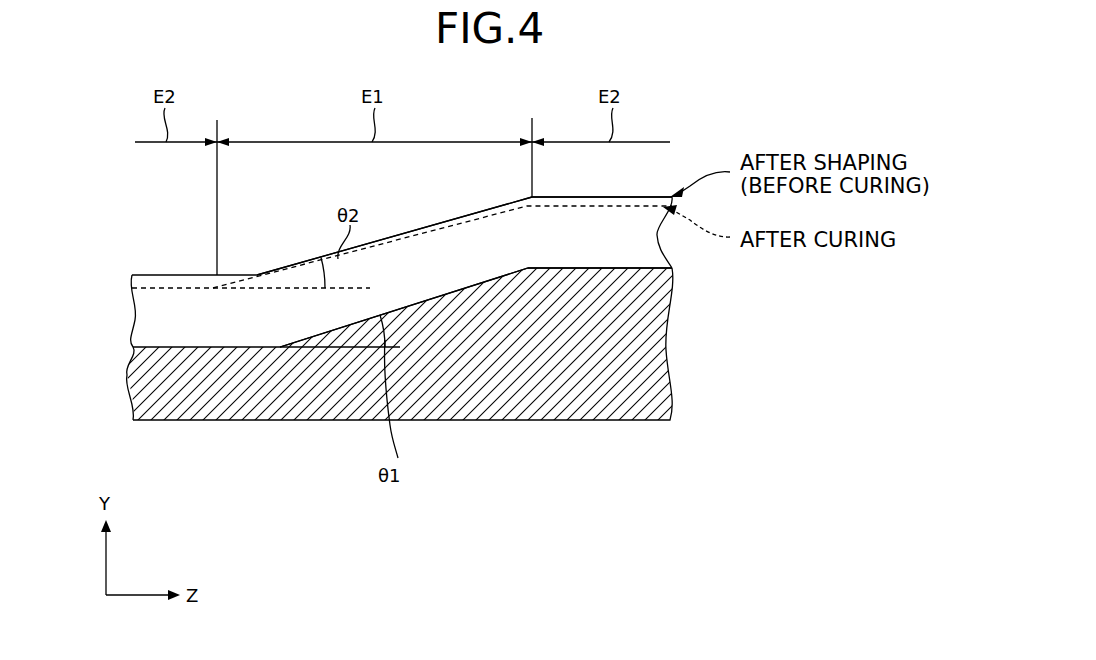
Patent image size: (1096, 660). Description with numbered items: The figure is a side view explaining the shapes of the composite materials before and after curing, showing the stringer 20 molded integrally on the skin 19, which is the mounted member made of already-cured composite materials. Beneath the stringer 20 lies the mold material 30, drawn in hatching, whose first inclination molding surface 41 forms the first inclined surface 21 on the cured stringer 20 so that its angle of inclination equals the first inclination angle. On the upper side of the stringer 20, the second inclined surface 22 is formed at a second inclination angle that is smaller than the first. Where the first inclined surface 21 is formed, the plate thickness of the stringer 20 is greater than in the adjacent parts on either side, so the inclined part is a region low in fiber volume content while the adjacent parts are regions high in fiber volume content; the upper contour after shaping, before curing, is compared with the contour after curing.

The skin 19 is at (438, 335).
The mold material 30 is at (136, 388).
The stringer 20 is at (146, 322).
The first inclined surface 21 is at (515, 272).
The second inclined surface 22 is at (447, 219).
The first inclination molding surface 41 is at (460, 292).